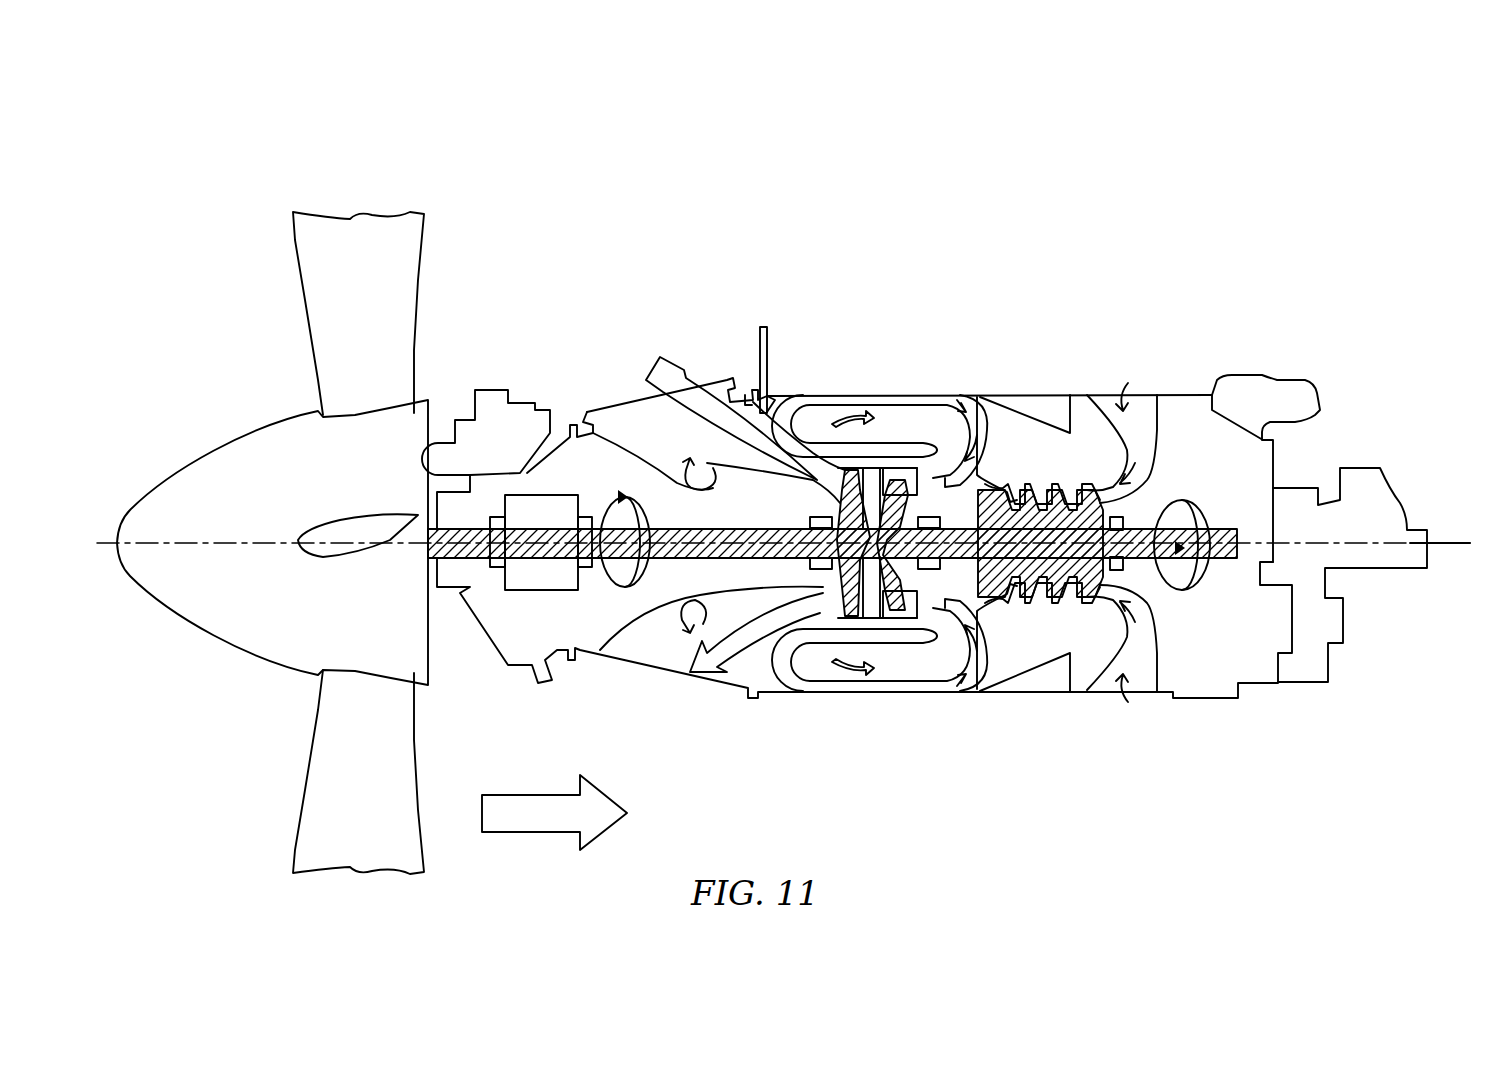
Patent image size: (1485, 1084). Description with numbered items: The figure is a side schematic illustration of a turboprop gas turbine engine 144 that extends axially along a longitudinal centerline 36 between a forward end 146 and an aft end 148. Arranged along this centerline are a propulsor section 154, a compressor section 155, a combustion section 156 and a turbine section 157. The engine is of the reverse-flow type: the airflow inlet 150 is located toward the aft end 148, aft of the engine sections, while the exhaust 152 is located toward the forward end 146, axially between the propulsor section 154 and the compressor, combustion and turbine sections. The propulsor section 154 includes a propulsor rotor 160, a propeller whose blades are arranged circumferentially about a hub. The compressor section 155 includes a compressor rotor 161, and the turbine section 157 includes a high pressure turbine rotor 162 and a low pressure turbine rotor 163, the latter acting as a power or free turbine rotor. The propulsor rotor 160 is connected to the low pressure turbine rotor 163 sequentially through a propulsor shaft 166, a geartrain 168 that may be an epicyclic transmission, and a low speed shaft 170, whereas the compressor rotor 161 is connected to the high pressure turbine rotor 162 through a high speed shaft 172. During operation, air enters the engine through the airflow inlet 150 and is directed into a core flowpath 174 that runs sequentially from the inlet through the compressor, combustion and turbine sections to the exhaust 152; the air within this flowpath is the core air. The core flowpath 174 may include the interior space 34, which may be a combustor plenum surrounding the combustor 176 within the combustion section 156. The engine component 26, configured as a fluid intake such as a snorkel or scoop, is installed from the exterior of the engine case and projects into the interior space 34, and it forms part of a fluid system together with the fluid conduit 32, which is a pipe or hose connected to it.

The engine component 26 is at (745, 393).
The fluid conduit 32 is at (770, 348).
The interior space 34 is at (777, 400).
The longitudinal centerline 36 is at (1452, 548).
The turboprop gas turbine engine 144 is at (920, 212).
The forward end 146 is at (117, 560).
The aft end 148 is at (1435, 533).
The airflow inlet 150 is at (1149, 374).
The exhaust 152 is at (716, 368).
The propulsor section 154 is at (380, 186).
The compressor section 155 is at (1044, 626).
The combustion section 156 is at (844, 388).
The turbine section 157 is at (872, 425).
The propulsor rotor 160 is at (323, 674).
The compressor rotor 161 is at (1043, 503).
The high pressure turbine (HPT) rotor 162 is at (920, 592).
The low pressure turbine (LPT) rotor 163 is at (818, 592).
The propulsor shaft 166 is at (470, 560).
The geartrain 168 is at (553, 484).
The low speed shaft 170 is at (673, 527).
The high speed shaft 172 is at (992, 618).
The core flowpath 174 is at (742, 672).
The combustor 176 is at (938, 416).